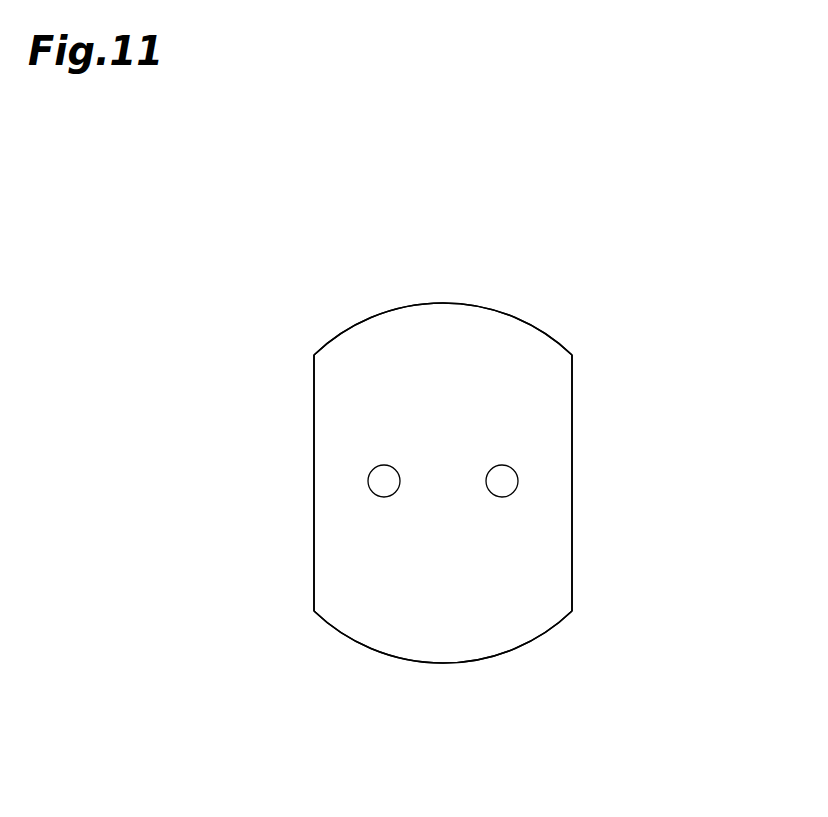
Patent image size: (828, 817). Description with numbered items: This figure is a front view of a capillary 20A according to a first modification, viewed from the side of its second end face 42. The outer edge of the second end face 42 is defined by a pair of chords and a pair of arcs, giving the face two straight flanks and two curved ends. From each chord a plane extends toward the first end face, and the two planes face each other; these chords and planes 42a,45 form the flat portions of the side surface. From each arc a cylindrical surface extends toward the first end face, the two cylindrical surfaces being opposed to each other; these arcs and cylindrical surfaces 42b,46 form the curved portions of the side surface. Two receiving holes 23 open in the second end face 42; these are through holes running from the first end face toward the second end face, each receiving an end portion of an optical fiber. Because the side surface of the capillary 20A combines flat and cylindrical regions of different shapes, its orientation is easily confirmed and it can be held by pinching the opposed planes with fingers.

The capillary 20A is at (322, 305).
The receiving holes 23 is at (496, 484).
The second end face 42 is at (353, 555).
The chords and planes 42a,45 is at (314, 487).
The arcs and cylindrical surfaces 42b,46 is at (438, 303).